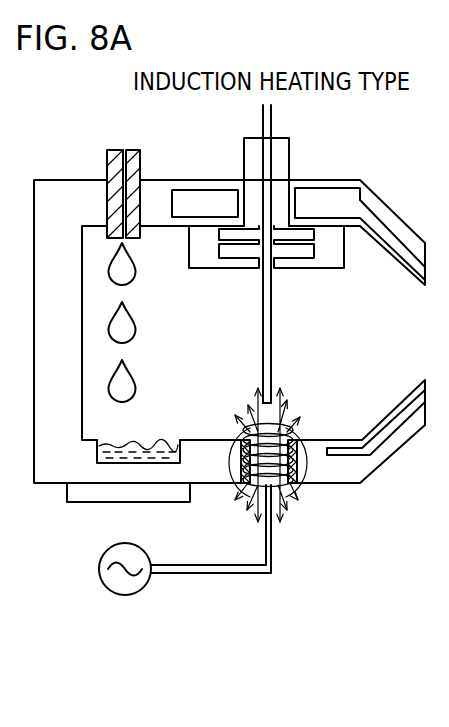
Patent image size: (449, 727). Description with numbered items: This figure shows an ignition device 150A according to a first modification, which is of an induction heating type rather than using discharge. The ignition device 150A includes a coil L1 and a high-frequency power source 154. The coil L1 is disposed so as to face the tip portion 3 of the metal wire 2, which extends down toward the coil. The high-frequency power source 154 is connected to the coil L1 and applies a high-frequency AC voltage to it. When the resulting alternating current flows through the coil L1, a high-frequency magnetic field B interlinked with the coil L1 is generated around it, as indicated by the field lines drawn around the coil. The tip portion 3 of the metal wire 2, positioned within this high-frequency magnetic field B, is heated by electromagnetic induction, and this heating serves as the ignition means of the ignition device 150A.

The ignition device 150A is at (344, 558).
The metal wire 2 is at (272, 316).
The tip portion 3 is at (283, 412).
The coil L1 is at (300, 428).
The high-frequency magnetic field B is at (257, 402).
The high-frequency power source 154 is at (130, 597).